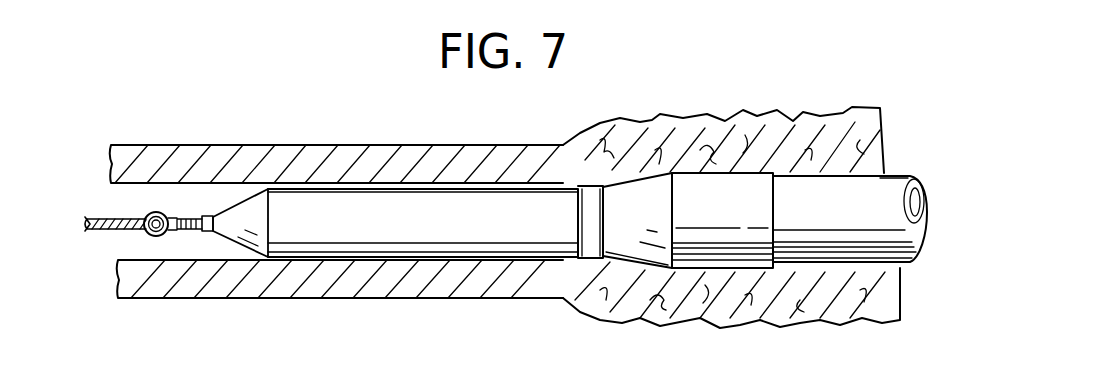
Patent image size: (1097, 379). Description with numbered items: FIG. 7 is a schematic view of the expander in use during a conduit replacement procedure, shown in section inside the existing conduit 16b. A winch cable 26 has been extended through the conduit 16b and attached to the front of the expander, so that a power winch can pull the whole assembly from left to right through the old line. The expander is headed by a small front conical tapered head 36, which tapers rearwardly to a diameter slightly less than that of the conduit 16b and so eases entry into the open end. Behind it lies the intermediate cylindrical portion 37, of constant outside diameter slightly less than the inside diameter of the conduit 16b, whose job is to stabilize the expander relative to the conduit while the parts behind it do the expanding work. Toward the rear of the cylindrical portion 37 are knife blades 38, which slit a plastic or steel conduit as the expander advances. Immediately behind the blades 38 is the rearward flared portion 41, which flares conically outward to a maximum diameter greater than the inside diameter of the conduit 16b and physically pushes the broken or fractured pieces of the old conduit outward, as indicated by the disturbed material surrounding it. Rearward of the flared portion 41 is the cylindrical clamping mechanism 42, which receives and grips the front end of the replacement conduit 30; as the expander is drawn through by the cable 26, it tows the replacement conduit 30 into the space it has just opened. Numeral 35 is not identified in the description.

The conduit 16b is at (352, 143).
The winch cable 26 is at (102, 230).
The replacement conduit 30 is at (891, 190).
The eye connector 35 is at (190, 214).
The front conical tapered head 36 is at (242, 238).
The intermediate cylindrical portion 37 is at (410, 228).
The knife blades 38 is at (580, 200).
The rearward flared portion 41 is at (647, 228).
The cylindrical clamping mechanism 42 is at (857, 215).